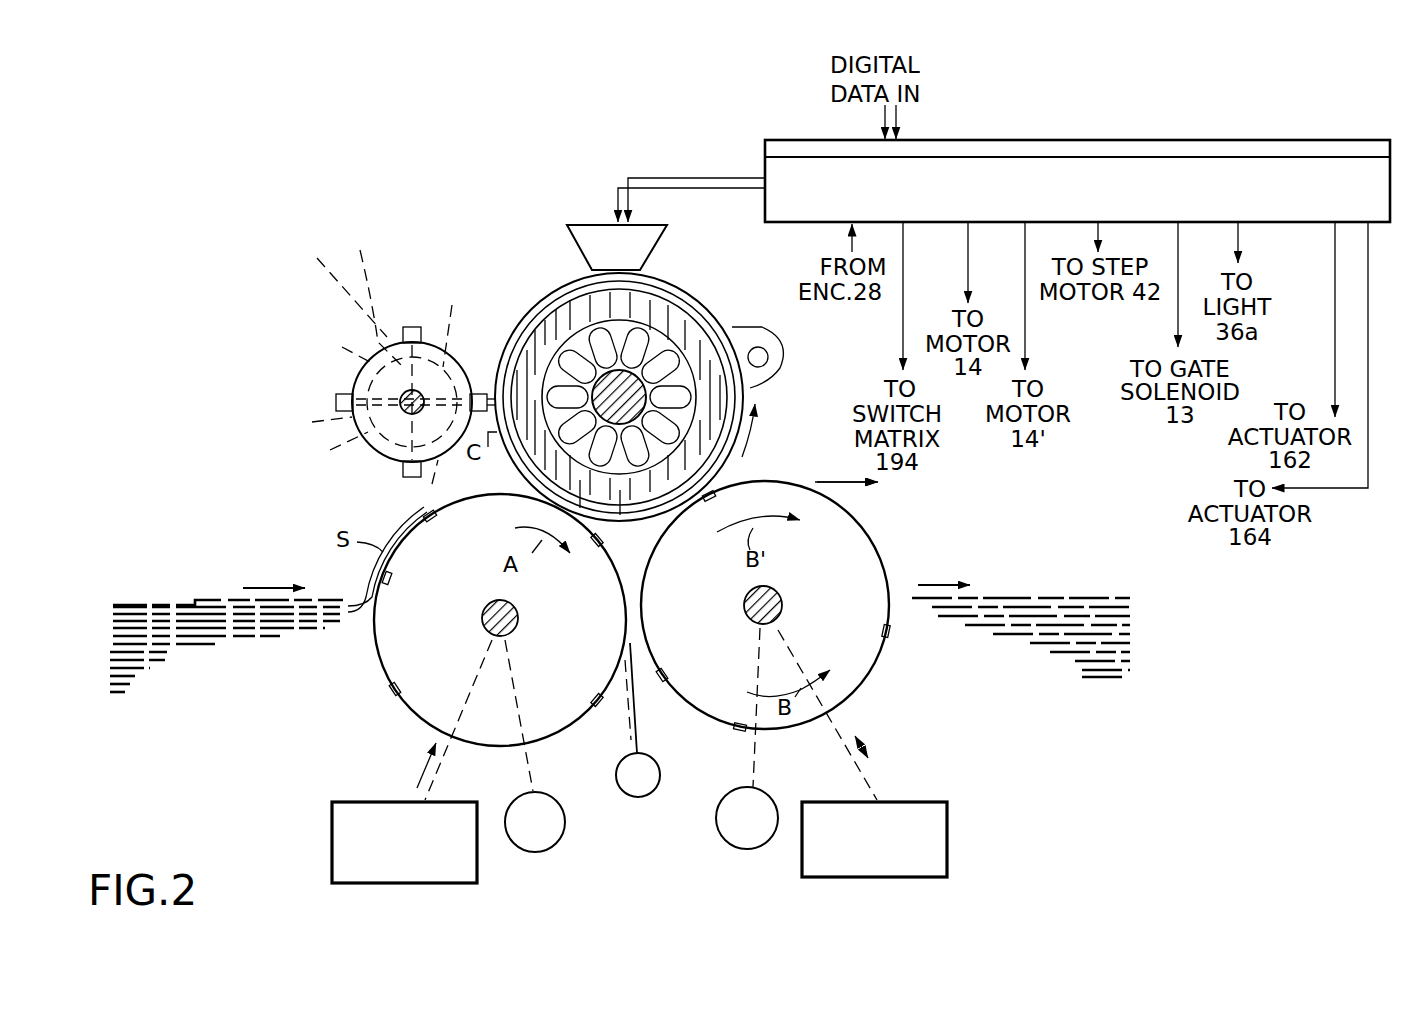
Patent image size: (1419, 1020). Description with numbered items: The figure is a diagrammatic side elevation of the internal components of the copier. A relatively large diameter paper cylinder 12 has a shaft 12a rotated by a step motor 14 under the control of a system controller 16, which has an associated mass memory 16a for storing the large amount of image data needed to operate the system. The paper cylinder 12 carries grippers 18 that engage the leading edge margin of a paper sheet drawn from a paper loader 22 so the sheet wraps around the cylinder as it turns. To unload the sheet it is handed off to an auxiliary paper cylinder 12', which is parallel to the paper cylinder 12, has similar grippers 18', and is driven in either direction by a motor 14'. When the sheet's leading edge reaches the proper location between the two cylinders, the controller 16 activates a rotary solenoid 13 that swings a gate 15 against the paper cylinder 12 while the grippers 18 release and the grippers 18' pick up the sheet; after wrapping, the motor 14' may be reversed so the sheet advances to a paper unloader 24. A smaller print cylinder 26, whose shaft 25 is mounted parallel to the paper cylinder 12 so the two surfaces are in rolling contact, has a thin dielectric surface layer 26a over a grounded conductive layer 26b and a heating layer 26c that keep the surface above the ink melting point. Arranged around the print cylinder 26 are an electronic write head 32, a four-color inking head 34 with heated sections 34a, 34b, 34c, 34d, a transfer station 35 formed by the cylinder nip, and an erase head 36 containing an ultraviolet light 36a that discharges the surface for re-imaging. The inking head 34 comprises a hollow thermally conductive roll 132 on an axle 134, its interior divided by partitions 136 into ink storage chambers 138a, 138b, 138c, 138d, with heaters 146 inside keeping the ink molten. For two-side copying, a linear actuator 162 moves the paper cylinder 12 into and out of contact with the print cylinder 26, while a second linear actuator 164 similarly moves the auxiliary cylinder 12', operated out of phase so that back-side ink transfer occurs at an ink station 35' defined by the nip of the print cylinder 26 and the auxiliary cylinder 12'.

The paper cylinder 12 is at (484, 620).
The auxiliary paper cylinder 12' is at (781, 606).
The shaft 12a is at (512, 631).
The rotary solenoid 13 is at (650, 773).
The step motor 14 is at (547, 767).
The motor 14' is at (747, 761).
The gate 15 is at (640, 713).
The system controller 16 is at (765, 175).
The mass memory 16a is at (1173, 146).
The grippers 18 is at (492, 608).
The grippers 18' is at (773, 609).
The paper loader 22 is at (175, 580).
The paper unloader 24 is at (1031, 596).
The shaft 25 is at (667, 347).
The print cylinder 26 is at (614, 349).
The surface layer 26a is at (535, 322).
The conductive layer 26b is at (660, 298).
The heating layer 26c is at (575, 318).
The electronic write head 32 is at (592, 224).
The inking head 34 is at (360, 362).
The inking head section 34a is at (484, 394).
The inking head section 34b is at (402, 326).
The inking head section 34c is at (342, 392).
The inking head section 34d is at (400, 469).
The transfer station 35 is at (495, 474).
The ink station 35' is at (763, 441).
The erase head 36 is at (788, 330).
The ultraviolet light 36a is at (770, 357).
The roll 132 is at (362, 378).
The axle 134 is at (338, 283).
The partitions 136 is at (371, 294).
The ink storage chamber 138a is at (407, 481).
The ink storage chamber 138b is at (453, 320).
The ink storage chamber 138c is at (326, 340).
The ink storage chamber 138d is at (313, 447).
The heaters 146 is at (303, 418).
The linear actuator 162 is at (332, 820).
The linear actuator 164 is at (950, 845).